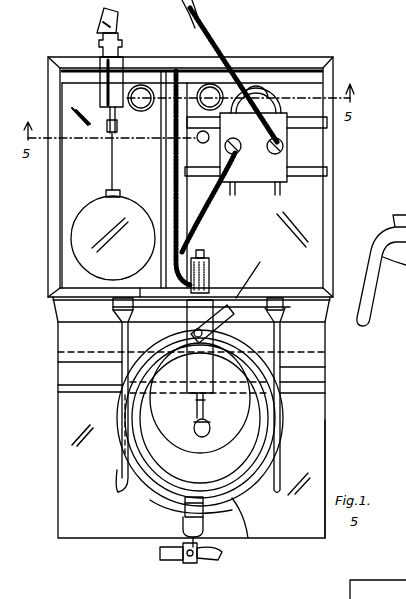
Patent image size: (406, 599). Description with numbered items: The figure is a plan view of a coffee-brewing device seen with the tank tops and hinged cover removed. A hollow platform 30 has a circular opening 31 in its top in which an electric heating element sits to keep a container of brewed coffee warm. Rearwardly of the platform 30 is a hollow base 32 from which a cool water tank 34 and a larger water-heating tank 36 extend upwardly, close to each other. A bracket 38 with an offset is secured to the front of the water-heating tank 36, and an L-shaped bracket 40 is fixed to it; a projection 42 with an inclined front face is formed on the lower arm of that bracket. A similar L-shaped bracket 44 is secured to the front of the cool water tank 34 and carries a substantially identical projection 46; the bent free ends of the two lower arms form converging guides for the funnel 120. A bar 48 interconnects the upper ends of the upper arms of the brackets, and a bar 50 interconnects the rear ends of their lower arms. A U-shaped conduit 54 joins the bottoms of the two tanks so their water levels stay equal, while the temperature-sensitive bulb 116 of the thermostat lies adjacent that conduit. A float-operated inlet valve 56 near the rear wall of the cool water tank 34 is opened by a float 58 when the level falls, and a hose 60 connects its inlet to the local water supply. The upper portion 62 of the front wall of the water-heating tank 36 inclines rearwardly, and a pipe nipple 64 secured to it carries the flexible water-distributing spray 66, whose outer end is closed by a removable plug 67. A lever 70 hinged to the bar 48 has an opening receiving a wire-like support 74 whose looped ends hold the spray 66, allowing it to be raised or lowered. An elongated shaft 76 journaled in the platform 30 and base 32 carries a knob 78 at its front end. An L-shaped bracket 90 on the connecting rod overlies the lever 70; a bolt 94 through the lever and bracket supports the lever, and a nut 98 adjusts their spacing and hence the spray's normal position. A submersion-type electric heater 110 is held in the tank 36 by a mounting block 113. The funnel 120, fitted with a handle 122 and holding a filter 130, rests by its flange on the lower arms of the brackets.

The platform 30 is at (72, 538).
The circular opening 31 is at (209, 530).
The base 32 is at (328, 214).
The cool water tank 34 is at (62, 203).
The water-heating tank 36 is at (324, 150).
The bracket 38 is at (265, 300).
The L-shaped bracket 40 is at (282, 367).
The projection 42 is at (320, 460).
The L-shaped bracket 44 is at (122, 361).
The projection 46 is at (122, 463).
The bar 48 is at (113, 303).
The bar 50 is at (140, 297).
The U-shaped conduit 54 is at (142, 86).
The float-operated inlet valve 56 is at (98, 70).
The float 58 is at (85, 243).
The hose 60 is at (97, 16).
The upper portion of front wall 62 is at (305, 215).
The pipe nipple 64 is at (206, 255).
The water-distributing spray 66 is at (208, 408).
The removable plug 67 is at (195, 432).
The lever 70 is at (160, 328).
The wire-like support 74 is at (195, 408).
The elongated shaft 76 is at (212, 558).
The knob 78 is at (173, 561).
The L-shaped bracket 90 is at (238, 300).
The bolt 94 is at (212, 300).
The nut 98 is at (200, 346).
The submersion-type electric heater 110 is at (270, 90).
The mounting block 113 is at (280, 118).
The temperature-sensitive bulb 116 is at (209, 136).
The funnel 120 is at (248, 473).
The handle 122 is at (190, 515).
The filter 130 is at (262, 416).